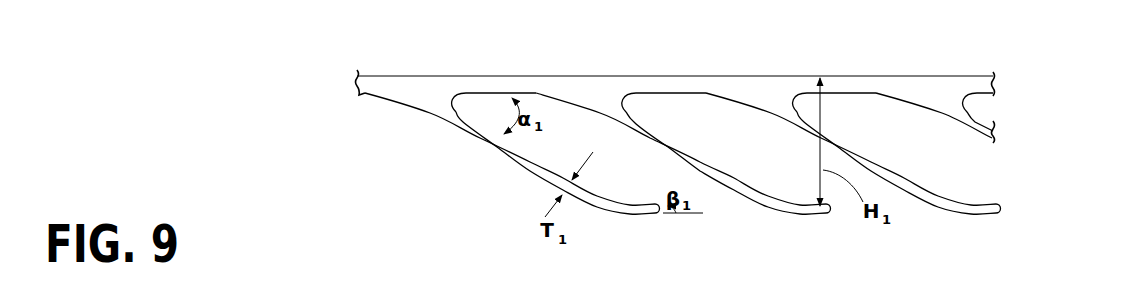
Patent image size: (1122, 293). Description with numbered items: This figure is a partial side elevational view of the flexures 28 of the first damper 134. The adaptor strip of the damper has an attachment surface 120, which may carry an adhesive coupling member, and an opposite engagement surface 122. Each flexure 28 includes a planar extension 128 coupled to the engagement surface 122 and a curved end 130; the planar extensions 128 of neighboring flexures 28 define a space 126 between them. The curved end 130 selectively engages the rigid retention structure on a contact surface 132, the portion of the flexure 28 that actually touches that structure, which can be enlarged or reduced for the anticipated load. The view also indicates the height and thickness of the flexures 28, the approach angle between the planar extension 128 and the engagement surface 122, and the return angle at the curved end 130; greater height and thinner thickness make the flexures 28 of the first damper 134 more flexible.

The flexure 28 is at (667, 147).
The attachment surface 120 is at (456, 75).
The engagement surface 122 is at (980, 95).
The space 126 is at (562, 125).
The planar extension 128 is at (537, 173).
The curved end 130 is at (669, 214).
The contact surface 132 is at (642, 219).
The first damper 134 is at (291, 90).